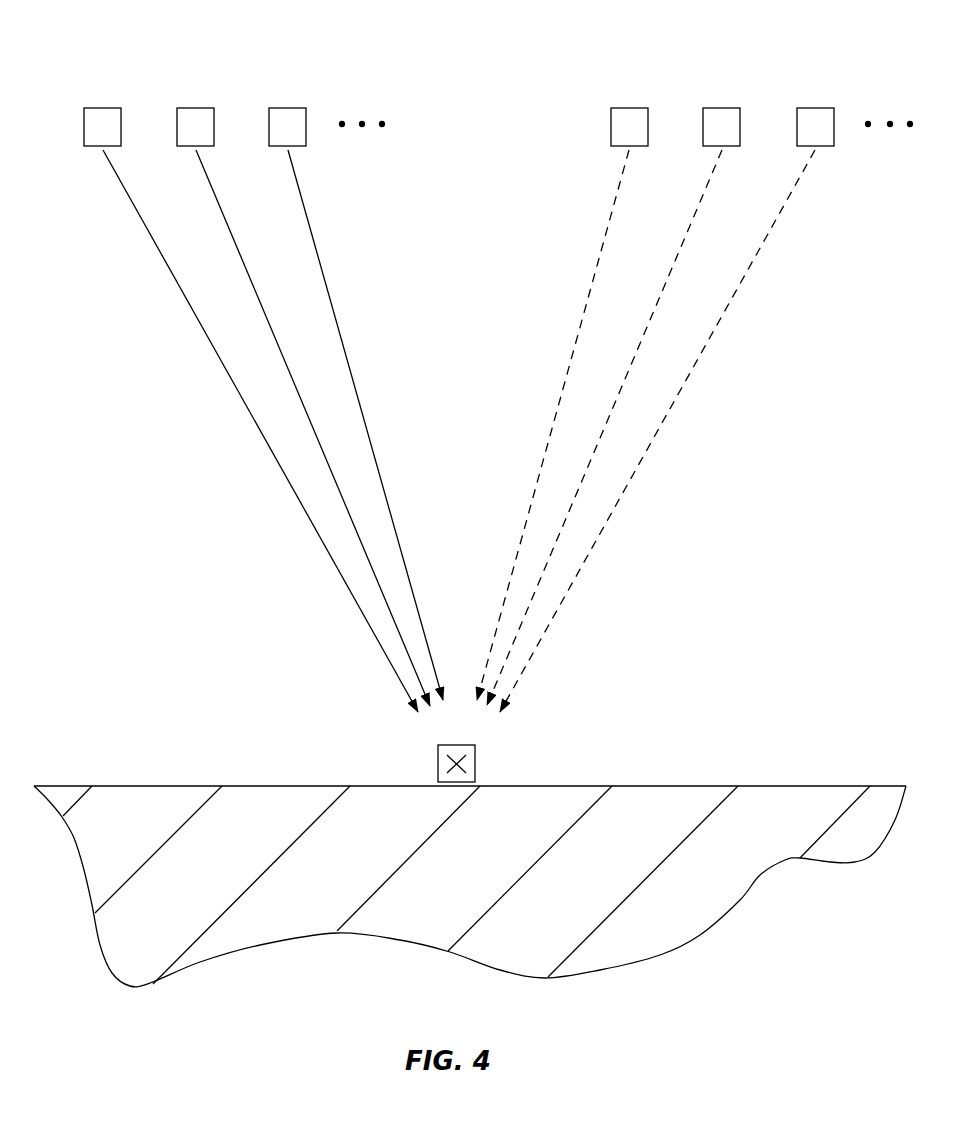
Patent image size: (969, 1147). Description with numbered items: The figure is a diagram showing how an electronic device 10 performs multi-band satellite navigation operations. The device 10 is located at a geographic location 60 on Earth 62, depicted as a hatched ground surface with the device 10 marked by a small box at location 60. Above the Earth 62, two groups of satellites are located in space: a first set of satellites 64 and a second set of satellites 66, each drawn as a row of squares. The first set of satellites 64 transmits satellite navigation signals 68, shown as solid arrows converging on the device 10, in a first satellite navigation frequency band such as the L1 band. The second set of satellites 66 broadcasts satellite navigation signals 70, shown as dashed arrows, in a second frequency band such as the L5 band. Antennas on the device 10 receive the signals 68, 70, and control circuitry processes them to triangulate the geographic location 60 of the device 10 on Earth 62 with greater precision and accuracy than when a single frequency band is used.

The electronic device 10 is at (438, 750).
The geographic location 60 is at (463, 763).
The Earth 62 is at (163, 798).
The first set of satellites 64 is at (335, 65).
The second set of satellites 66 is at (857, 65).
The satellite navigation signals 68 is at (155, 364).
The satellite navigation signals 70 is at (746, 364).